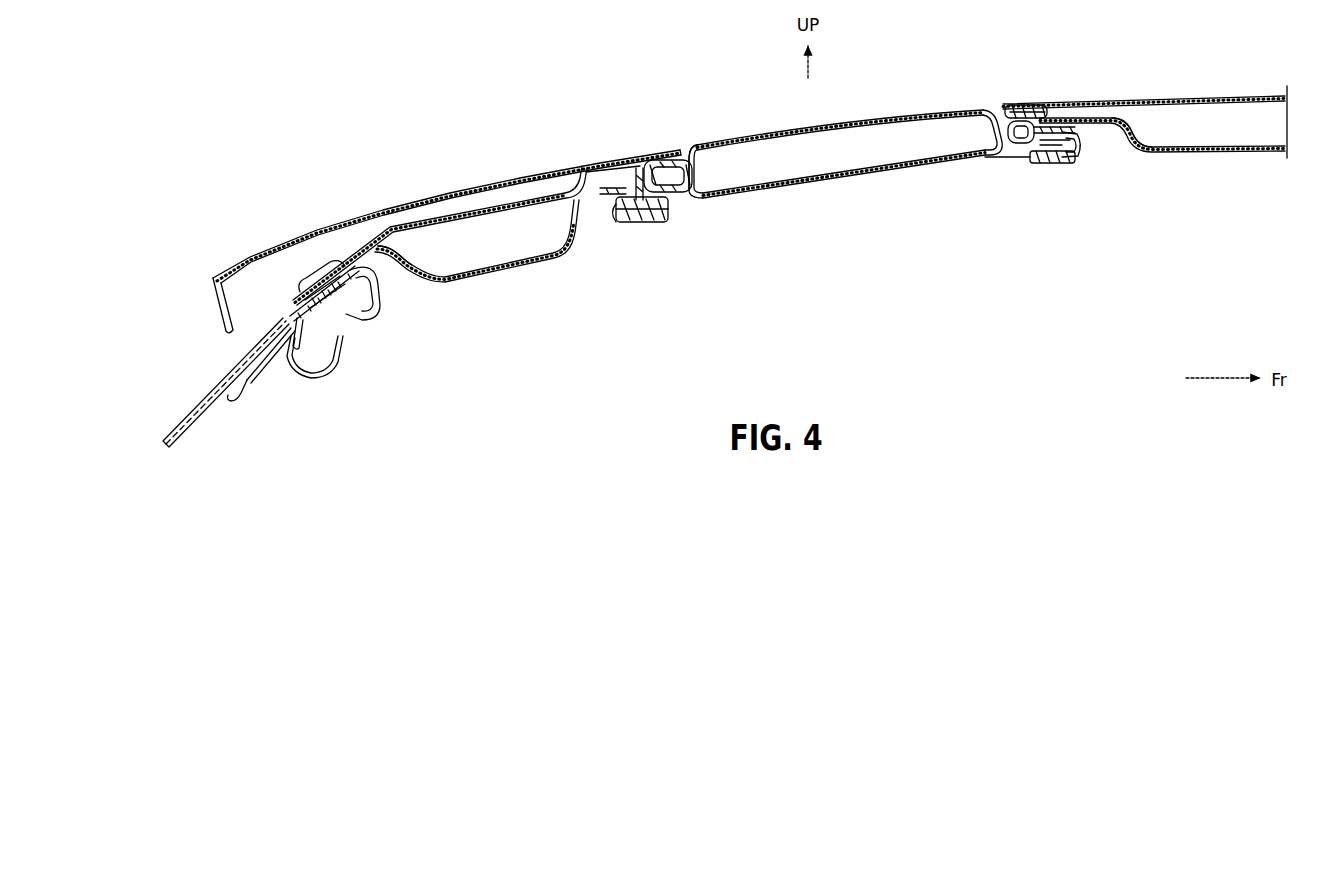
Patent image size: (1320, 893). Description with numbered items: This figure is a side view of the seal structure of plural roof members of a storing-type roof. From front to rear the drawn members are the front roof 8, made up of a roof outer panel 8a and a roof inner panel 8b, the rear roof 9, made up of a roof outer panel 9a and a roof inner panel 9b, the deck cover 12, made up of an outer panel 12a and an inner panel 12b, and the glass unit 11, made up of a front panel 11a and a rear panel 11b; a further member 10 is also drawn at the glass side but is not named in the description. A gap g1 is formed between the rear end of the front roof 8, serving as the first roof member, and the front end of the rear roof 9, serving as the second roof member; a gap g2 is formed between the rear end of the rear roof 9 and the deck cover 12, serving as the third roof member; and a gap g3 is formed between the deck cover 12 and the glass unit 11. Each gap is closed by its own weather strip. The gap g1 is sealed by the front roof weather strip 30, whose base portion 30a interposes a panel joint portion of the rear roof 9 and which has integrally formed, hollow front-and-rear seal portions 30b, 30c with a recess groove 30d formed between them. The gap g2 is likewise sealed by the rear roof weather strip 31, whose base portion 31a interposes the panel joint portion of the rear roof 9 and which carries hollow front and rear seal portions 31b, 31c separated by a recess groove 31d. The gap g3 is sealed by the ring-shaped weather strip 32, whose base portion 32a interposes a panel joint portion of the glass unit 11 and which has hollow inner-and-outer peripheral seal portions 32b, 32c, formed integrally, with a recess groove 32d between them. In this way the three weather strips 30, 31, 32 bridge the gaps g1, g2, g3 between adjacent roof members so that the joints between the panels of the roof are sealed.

The front roof 8 is at (1145, 109).
The roof outer panel 8a is at (1227, 96).
The roof inner panel 8b is at (1222, 153).
The rear roof 9 is at (845, 135).
The roof outer panel 9a is at (919, 116).
The roof inner panel 9b is at (831, 177).
The windshield glass 10 is at (199, 398).
The glass unit 11 is at (273, 374).
The front panel 11a is at (323, 376).
The rear panel 11b is at (249, 398).
The deck cover 12 is at (447, 225).
The outer panel 12a is at (427, 218).
The inner panel 12b is at (500, 269).
The front roof weather strip 30 is at (1068, 131).
The base portion 30a is at (1080, 155).
The front seal portion 30b is at (1095, 140).
The rear seal portion 30c is at (993, 129).
The recess groove 30d is at (1033, 108).
The rear roof weather strip 31 is at (640, 196).
The base portion 31a is at (619, 216).
The front seal portion 31b is at (700, 176).
The rear seal portion 31c is at (606, 198).
The recess groove 31d is at (631, 158).
The ring-shaped weather strip 32 is at (374, 296).
The base portion 32a is at (380, 300).
The inner peripheral seal portion 32b is at (292, 348).
The outer peripheral seal portion 32c is at (372, 278).
The recess groove 32d is at (322, 286).
The gap g1 is at (995, 104).
The gap g2 is at (686, 140).
The gap g3 is at (281, 305).